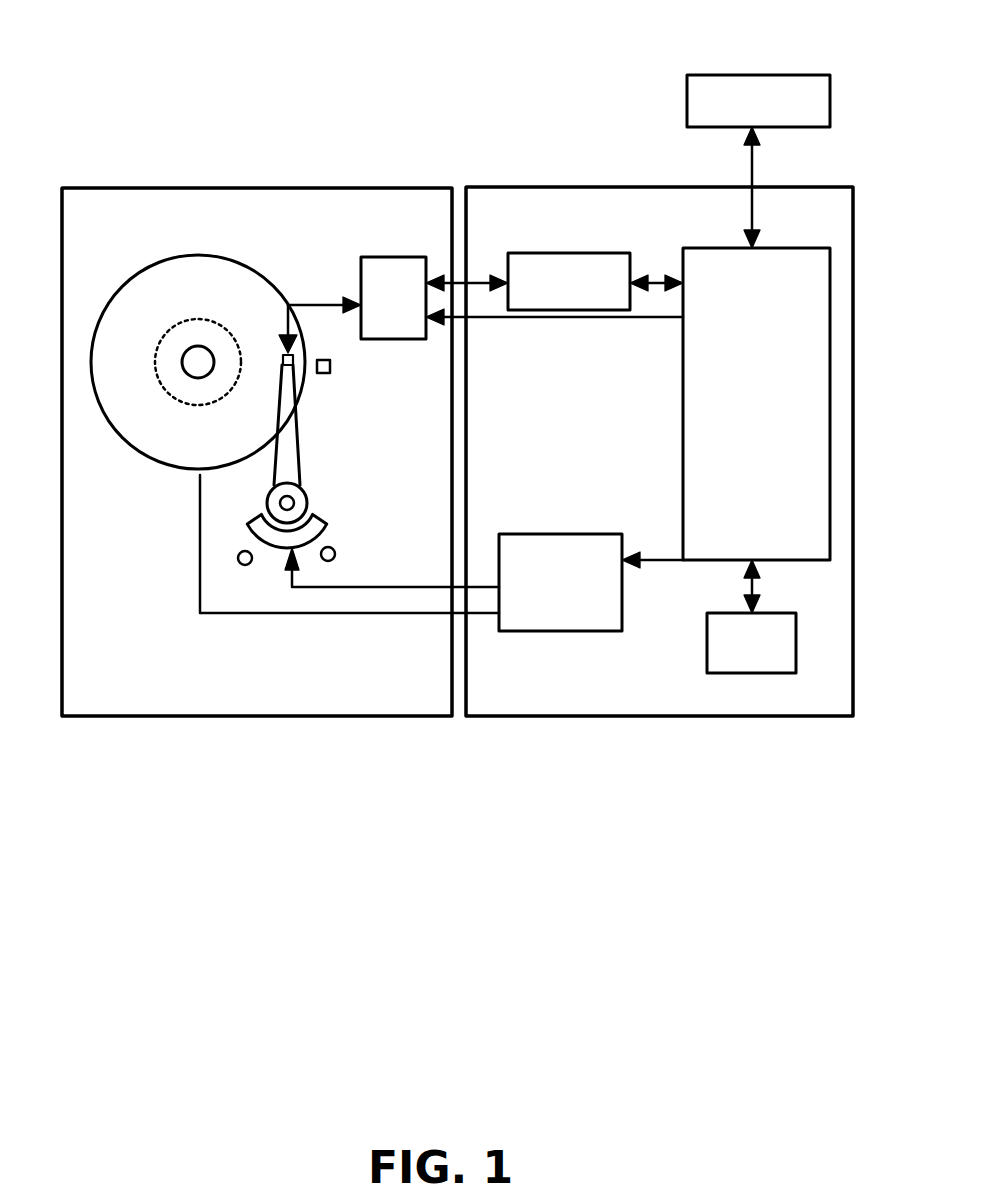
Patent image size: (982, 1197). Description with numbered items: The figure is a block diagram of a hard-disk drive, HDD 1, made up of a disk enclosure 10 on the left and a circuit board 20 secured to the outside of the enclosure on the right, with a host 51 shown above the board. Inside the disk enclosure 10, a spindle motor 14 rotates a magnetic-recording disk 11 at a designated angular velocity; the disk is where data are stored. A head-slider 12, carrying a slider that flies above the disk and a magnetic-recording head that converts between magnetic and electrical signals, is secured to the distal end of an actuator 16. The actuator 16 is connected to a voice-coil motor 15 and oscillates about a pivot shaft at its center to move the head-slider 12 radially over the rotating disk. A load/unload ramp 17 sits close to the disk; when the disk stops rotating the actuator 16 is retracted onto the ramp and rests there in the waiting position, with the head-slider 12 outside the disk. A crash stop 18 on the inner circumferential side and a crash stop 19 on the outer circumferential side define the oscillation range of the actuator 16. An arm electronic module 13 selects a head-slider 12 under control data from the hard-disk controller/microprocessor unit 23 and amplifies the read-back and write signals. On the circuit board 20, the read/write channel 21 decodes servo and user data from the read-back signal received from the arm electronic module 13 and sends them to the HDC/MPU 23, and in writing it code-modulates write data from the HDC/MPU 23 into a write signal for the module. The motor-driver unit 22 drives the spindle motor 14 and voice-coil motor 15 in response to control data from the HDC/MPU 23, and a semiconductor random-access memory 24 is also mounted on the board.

The hard-disk drive 1 is at (528, 170).
The disk enclosure 10 is at (248, 188).
The magnetic-recording disk 11 is at (125, 443).
The head-slider 12 is at (283, 360).
The arm electronic module 13 is at (385, 257).
The spindle motor 14 is at (217, 327).
The voice-coil motor 15 is at (322, 522).
The actuator 16 is at (300, 465).
The load/unload ramp 17 is at (330, 367).
The crash stop on the inner circumferential side 18 is at (334, 549).
The crash stop on the outer circumferential side 19 is at (240, 552).
The circuit board 20 is at (655, 190).
The read/write channel 21 is at (575, 252).
The motor-driver unit 22 is at (572, 534).
The hard-disk controller/microprocessor unit 23 is at (777, 248).
The semiconductor random-access memory 24 is at (707, 650).
The host 51 is at (760, 73).